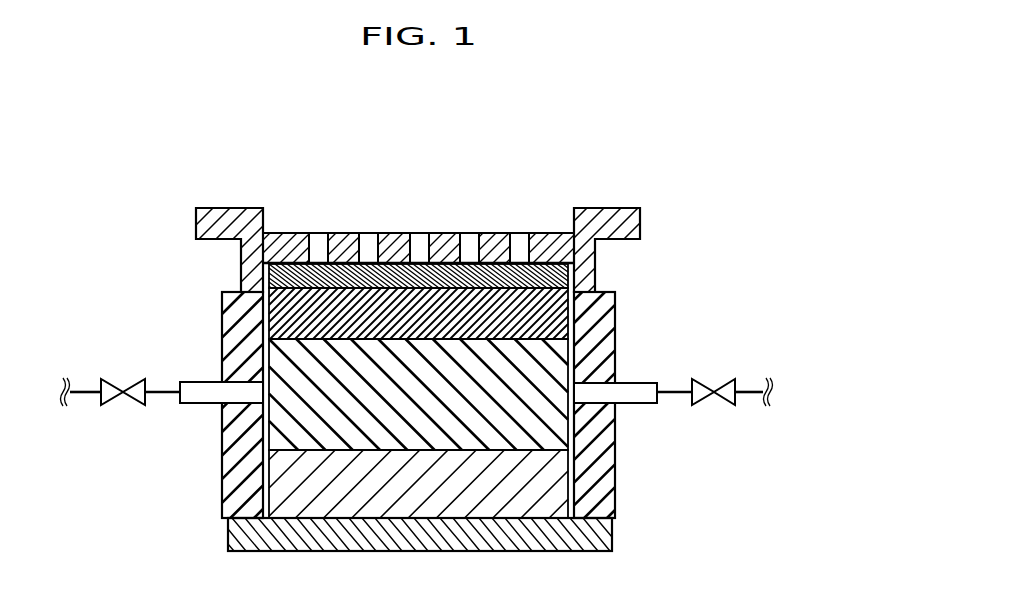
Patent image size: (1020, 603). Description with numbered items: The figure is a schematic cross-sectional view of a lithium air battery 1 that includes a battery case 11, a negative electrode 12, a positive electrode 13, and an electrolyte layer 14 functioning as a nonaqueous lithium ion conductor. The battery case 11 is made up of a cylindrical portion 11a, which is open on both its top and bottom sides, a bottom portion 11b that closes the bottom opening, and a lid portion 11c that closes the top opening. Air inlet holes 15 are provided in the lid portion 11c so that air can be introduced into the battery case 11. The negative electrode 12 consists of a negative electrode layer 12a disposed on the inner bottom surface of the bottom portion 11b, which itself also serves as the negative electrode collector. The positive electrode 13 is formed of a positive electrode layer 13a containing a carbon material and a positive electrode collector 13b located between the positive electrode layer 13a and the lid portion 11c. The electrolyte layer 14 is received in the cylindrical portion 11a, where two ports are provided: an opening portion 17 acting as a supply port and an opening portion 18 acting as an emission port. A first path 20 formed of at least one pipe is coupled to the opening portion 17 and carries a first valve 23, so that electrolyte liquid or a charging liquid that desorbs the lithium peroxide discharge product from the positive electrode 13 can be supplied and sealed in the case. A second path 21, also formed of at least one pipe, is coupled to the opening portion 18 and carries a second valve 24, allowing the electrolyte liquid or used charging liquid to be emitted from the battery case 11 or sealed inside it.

The lithium air battery 1 is at (512, 155).
The battery case 11 is at (222, 500).
The cylindrical portion 11a is at (238, 427).
The bottom portion 11b is at (585, 537).
The lid portion 11c is at (557, 252).
The negative electrode 12 is at (765, 493).
The negative electrode layer 12a is at (537, 483).
The positive electrode 13 is at (727, 277).
The positive electrode layer 13a is at (537, 315).
The positive electrode collector 13b is at (537, 271).
The electrolyte layer 14 is at (293, 427).
The air inlet holes 15 is at (315, 233).
The opening portion 17 is at (641, 405).
The opening portion 18 is at (197, 382).
The first path 20 is at (755, 405).
The second path 21 is at (82, 392).
The first valve 23 is at (700, 405).
The second valve 24 is at (130, 379).